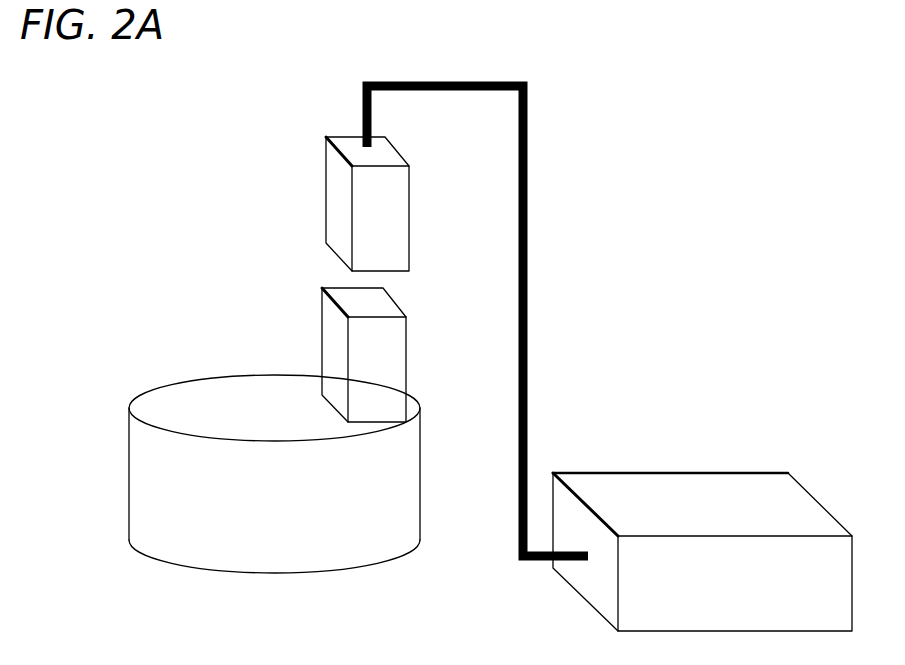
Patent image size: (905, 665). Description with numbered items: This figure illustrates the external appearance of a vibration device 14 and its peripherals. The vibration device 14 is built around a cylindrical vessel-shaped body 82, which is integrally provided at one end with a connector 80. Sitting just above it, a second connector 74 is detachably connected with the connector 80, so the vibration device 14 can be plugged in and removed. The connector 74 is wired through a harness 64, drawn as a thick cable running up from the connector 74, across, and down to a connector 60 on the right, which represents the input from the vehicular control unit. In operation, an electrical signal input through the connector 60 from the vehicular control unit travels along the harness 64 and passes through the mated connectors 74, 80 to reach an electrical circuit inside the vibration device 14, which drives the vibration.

The vibration device 14 is at (223, 341).
The cylindrical vessel-shaped body 82 is at (178, 395).
The connector 80 is at (327, 343).
The connector 74 is at (332, 190).
The harness 64 is at (530, 290).
The connector 60 is at (709, 490).